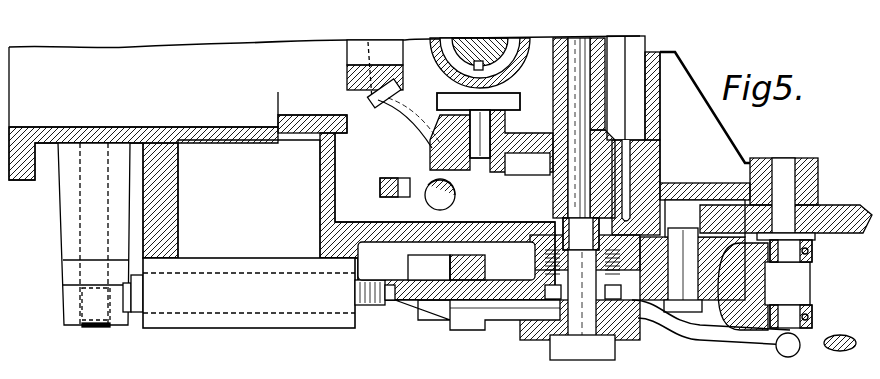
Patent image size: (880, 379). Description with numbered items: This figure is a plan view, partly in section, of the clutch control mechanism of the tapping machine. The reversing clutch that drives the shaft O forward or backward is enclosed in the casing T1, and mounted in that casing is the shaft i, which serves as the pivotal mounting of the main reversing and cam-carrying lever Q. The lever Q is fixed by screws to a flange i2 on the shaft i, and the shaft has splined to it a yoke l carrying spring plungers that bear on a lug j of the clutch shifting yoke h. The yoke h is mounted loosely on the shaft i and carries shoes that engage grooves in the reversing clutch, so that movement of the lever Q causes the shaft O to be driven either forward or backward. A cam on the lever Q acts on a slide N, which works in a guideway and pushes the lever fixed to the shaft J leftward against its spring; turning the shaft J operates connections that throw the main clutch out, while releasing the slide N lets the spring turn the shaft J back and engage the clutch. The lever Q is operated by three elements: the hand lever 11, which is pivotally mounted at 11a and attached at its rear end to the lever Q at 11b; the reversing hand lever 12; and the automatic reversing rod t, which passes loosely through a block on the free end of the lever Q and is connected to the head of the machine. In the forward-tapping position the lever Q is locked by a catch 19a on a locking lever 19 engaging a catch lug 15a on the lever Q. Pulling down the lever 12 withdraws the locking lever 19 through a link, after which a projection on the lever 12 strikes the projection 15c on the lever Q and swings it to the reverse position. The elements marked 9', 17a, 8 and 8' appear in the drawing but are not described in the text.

The casing T1 is at (325, 219).
The shaft J is at (100, 328).
The slide N is at (136, 314).
The shaft O is at (447, 75).
The arm 9' is at (406, 113).
The clutch shifting yoke h is at (512, 135).
The yoke l is at (600, 178).
The shaft i is at (578, 312).
The flange i2 is at (560, 248).
The lever Q is at (492, 292).
The catch lug 15a is at (420, 262).
The projection 15c is at (455, 323).
The locking lever 19 is at (482, 262).
The locking catch 19a is at (455, 262).
The pin 17a is at (432, 185).
The lug j is at (420, 200).
The reversing rod t is at (520, 175).
The hand lever 11 is at (870, 225).
The pivot 11a is at (788, 165).
The pivotal attachment 11b is at (688, 248).
The block 8 is at (778, 286).
The plates 8' is at (813, 281).
The hand lever 12 is at (822, 348).